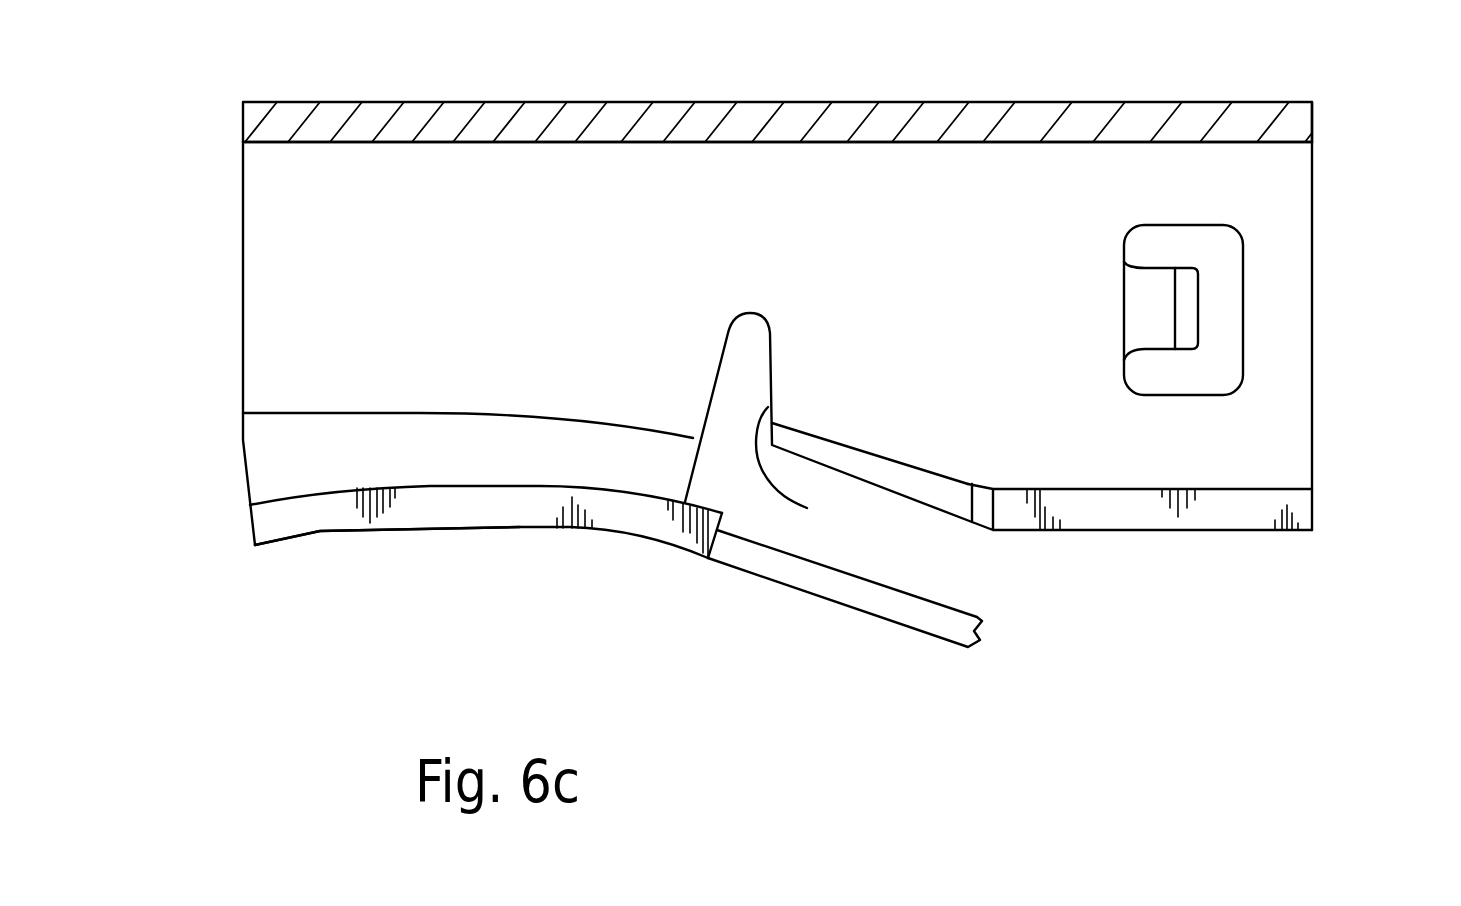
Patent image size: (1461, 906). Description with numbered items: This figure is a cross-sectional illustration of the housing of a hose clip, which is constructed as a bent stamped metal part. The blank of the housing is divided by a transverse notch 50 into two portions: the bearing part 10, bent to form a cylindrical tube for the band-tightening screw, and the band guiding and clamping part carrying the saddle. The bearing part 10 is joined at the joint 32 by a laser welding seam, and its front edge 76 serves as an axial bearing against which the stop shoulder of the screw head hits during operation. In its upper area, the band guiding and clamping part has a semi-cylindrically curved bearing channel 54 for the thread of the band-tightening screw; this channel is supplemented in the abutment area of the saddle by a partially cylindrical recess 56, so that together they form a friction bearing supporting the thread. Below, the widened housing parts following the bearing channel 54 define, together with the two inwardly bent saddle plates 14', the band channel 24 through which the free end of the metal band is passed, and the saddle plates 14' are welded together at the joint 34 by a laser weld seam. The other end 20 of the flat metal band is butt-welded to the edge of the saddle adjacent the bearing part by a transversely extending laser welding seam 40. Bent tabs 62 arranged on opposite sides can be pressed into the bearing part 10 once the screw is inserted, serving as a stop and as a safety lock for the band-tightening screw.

The bearing part 10 is at (1253, 127).
The front edge 76 is at (1313, 121).
The bearing channel 54 is at (382, 143).
The bent tabs 62 is at (1157, 308).
The band channel 24 is at (302, 440).
The partially cylindrical recess 56 is at (436, 487).
The saddle plates 14' is at (481, 566).
The joint 34 is at (387, 536).
The laser welding seam 40 is at (706, 576).
The transverse notch 50 is at (807, 508).
The joint 32 is at (1110, 508).
The end of metal band 20 is at (840, 583).